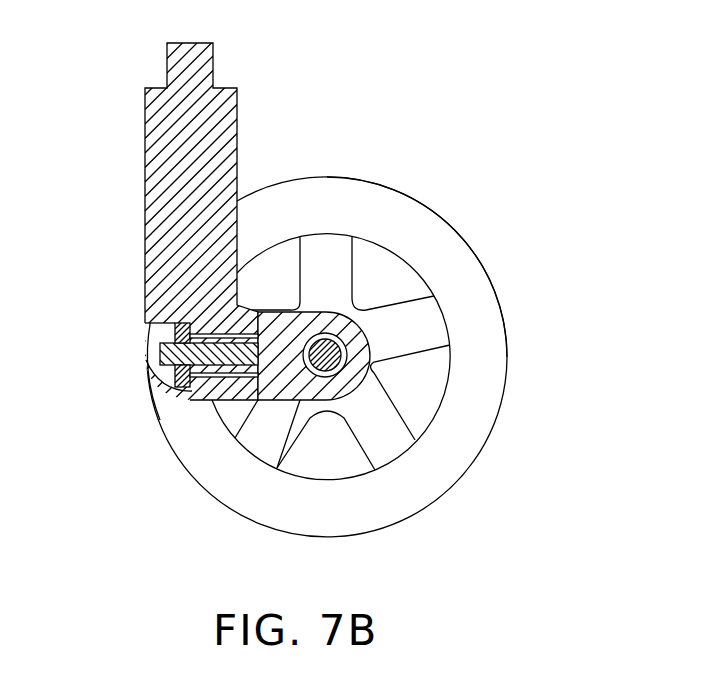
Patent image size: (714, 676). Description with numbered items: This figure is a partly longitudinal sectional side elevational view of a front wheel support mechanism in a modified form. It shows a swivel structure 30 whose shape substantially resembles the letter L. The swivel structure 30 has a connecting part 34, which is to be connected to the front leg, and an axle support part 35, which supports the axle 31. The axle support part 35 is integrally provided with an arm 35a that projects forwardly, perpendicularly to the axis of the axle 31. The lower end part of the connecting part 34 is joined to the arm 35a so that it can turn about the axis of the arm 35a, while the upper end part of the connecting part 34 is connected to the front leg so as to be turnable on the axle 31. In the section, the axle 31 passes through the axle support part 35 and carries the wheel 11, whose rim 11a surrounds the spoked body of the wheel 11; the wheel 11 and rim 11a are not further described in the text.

The wheel 11 is at (432, 228).
The wheel rim 11a is at (403, 500).
The swivel structure 30 is at (250, 122).
The axle 31 is at (370, 365).
The connecting part 34 is at (146, 147).
The axle support part 35 is at (285, 383).
The arm 35a is at (186, 390).